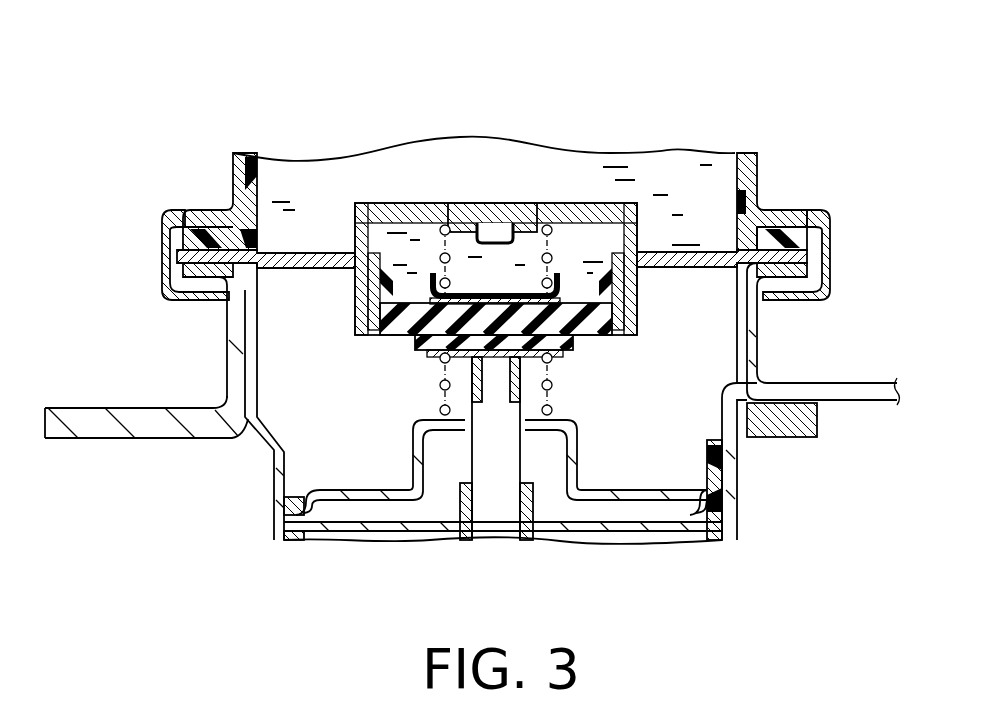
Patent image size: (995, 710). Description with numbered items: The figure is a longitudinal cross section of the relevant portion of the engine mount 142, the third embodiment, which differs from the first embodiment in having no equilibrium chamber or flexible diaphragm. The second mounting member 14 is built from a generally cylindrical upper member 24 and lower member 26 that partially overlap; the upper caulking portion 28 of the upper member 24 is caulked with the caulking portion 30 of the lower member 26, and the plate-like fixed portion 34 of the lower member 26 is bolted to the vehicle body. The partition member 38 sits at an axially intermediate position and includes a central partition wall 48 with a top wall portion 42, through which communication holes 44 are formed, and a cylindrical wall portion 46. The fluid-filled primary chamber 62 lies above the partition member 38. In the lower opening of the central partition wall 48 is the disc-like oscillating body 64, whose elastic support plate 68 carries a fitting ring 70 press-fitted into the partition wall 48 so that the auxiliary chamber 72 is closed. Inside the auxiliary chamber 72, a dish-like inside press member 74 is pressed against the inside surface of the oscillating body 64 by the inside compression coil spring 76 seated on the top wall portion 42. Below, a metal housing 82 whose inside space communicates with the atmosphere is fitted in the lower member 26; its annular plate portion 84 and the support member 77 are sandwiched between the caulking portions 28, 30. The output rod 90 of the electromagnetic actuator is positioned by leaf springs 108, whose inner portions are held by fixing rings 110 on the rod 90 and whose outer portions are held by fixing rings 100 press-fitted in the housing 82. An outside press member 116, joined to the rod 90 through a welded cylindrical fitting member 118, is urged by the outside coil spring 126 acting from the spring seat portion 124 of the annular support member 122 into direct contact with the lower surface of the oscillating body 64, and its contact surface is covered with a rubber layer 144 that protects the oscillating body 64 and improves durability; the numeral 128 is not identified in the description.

The second mounting member 14 is at (208, 165).
The primary chamber 62 is at (274, 165).
The support member 77 is at (170, 235).
The caulking portion 28 is at (163, 270).
The annular plate portion 84 is at (190, 274).
The partition member 38 is at (680, 170).
The engine mount 142 is at (697, 93).
The upper member 24 is at (756, 166).
The cylindrical wall portion 46 is at (654, 240).
The auxiliary chamber 72 is at (745, 246).
The caulking portion 30 is at (810, 280).
The fitting ring 70 is at (375, 300).
The lower member 26 is at (233, 375).
The fixed portion 34 is at (145, 430).
The housing 82 is at (256, 511).
The central partition wall 48 is at (475, 190).
The communication holes 44 is at (413, 223).
The top wall portion 42 is at (503, 220).
The inside press member 74 is at (468, 252).
The compression coil spring 76 is at (535, 262).
The elastic support plate 68 is at (547, 58).
The oscillating body 64 is at (572, 283).
The rubber layer 144 is at (575, 341).
The outside press member 116 is at (433, 363).
The fitting member 118 is at (471, 391).
The compression coil spring 126 is at (560, 404).
The spring seat portion 124 is at (457, 423).
The support member 122 is at (460, 601).
The output rod 90 is at (505, 533).
The fixing rings 110 is at (533, 505).
The leaf spring 108 is at (410, 532).
The fixing ring 100 is at (714, 505).
The mounting flange 128 is at (840, 395).